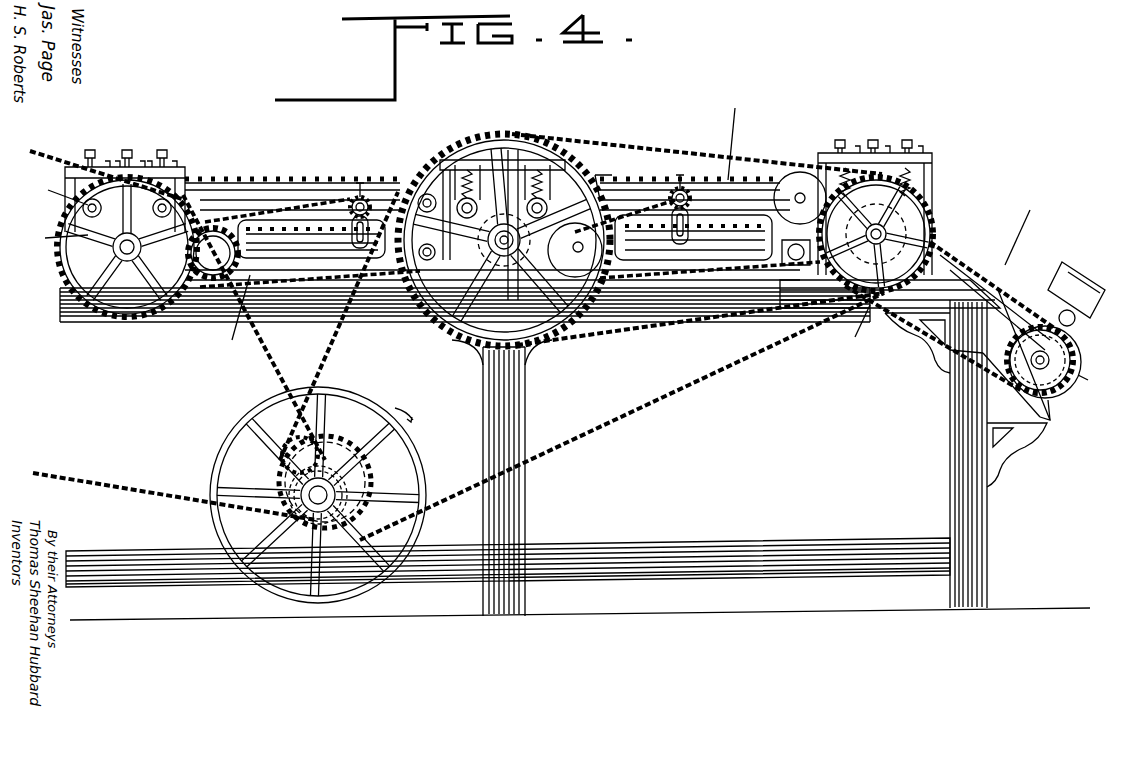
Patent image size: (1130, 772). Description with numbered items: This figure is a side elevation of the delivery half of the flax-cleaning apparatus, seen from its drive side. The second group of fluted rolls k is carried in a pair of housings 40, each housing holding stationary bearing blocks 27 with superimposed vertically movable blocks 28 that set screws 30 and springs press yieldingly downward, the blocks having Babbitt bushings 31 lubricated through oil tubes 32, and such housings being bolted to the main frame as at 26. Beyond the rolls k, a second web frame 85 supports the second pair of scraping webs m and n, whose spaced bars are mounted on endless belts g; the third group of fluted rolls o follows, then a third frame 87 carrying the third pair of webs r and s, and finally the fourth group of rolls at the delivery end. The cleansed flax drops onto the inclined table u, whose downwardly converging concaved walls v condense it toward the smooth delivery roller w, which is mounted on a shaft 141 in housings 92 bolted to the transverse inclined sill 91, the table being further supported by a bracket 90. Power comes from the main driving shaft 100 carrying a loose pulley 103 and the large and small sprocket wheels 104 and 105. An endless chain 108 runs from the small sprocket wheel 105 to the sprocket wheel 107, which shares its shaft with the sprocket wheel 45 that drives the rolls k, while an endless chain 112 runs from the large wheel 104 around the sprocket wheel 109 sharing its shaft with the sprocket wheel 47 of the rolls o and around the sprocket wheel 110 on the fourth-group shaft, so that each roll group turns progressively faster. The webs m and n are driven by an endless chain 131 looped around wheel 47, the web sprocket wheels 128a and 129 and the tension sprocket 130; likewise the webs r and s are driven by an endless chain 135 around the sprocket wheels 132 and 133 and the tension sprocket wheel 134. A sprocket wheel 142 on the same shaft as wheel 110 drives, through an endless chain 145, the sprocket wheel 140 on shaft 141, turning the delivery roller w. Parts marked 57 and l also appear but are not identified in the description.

The bolts 26 is at (504, 251).
The stationary bearing blocks 27 is at (80, 265).
The vertically movable bearing blocks 28 is at (480, 200).
The set screws 30 is at (165, 150).
The Babbitt bushings 31 is at (215, 195).
The oil tubes 32 is at (130, 160).
The housings 40 is at (185, 185).
The sprocket wheel 45 is at (105, 275).
The sprocket wheel 47 is at (508, 290).
The right gear wheel 57 is at (850, 278).
The second web-supporting frame 85 is at (232, 315).
The third web-supporting frame 87 is at (675, 258).
The bracket 90 is at (1020, 450).
The transverse inclined sill 91 is at (950, 413).
The housings 92 is at (1075, 275).
The main driving shaft 100 is at (300, 490).
The loose pulley 103 is at (380, 575).
The large sprocket wheel 104 is at (388, 465).
The small sprocket wheel 105 is at (330, 440).
The sprocket wheel 107 is at (115, 270).
The endless chain 108 is at (260, 345).
The sprocket wheel 109 is at (561, 335).
The sprocket wheel 110 is at (852, 329).
The endless chain 112 is at (760, 358).
The sprocket wheel 128a is at (205, 280).
The sprocket wheel 129 is at (445, 205).
The tension sprocket 130 is at (368, 203).
The endless chain 131 is at (310, 285).
The sprocket wheel 132 is at (575, 250).
The sprocket wheel 133 is at (790, 175).
The tension sprocket wheel 134 is at (731, 136).
The endless chain 135 is at (733, 272).
The sprocket wheel 140 is at (1095, 383).
The shaft 141 is at (1048, 420).
The sprocket wheel 142 is at (932, 233).
The endless chain 145 is at (1022, 230).
The endless belts g is at (630, 185).
The second group of fluted rolls k is at (55, 229).
The right head frame l is at (850, 180).
The web m is at (290, 210).
The web n is at (283, 255).
The third group of fluted rolls o is at (460, 190).
The web r is at (660, 220).
The web s is at (665, 222).
The inclined table u is at (972, 240).
The concaved walls v is at (1012, 290).
The delivery roller w is at (1055, 385).